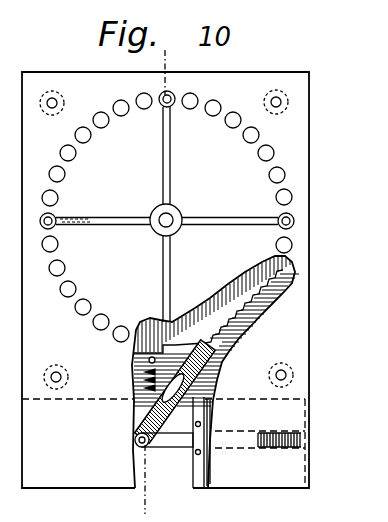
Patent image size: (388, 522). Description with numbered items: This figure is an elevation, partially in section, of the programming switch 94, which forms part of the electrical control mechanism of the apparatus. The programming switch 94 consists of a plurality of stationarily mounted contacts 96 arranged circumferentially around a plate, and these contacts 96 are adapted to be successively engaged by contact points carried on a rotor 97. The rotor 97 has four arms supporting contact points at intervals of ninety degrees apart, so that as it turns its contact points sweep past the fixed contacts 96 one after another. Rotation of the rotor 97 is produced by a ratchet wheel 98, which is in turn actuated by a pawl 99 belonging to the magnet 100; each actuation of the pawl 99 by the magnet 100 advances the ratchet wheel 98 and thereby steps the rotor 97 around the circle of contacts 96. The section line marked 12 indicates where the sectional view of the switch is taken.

The programming switch 94 is at (309, 151).
The stationarily mounted contacts 96 is at (288, 196).
The rotor 97 is at (181, 212).
The ratchet wheel 98 is at (292, 288).
The pawl 99 is at (224, 361).
The magnet 100 is at (208, 476).
The section line 12 is at (147, 62).